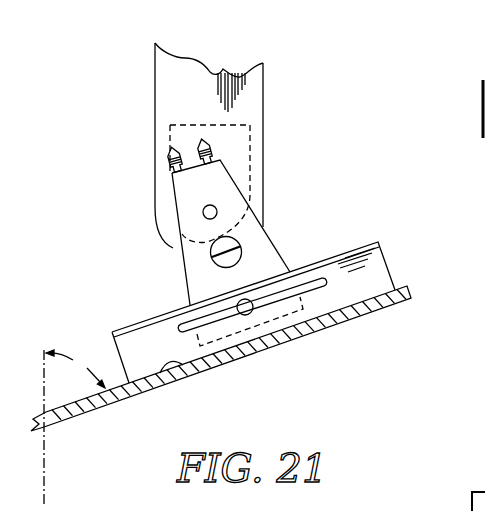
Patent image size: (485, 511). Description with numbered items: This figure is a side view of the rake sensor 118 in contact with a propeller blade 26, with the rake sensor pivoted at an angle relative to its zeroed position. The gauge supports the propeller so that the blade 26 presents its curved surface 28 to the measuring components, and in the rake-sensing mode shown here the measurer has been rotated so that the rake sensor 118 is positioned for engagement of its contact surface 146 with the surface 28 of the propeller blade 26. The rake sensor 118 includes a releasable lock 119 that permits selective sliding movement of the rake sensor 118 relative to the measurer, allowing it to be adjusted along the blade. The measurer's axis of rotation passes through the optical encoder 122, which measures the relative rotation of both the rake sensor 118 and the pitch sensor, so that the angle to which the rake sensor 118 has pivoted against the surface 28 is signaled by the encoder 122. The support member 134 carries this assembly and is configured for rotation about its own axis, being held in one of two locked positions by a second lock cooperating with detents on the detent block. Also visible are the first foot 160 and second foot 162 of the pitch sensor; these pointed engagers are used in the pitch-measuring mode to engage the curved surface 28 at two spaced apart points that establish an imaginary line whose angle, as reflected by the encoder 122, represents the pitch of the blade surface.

The support member 134 is at (168, 92).
The optical encoder 122 is at (170, 125).
The second foot 162 is at (162, 154).
The first foot 160 is at (209, 137).
The rake sensor 118 is at (378, 275).
The releasable lock 119 is at (245, 315).
The propeller blade 26 is at (288, 338).
The contact surface 146 is at (362, 305).
The surface 28 is at (163, 370).